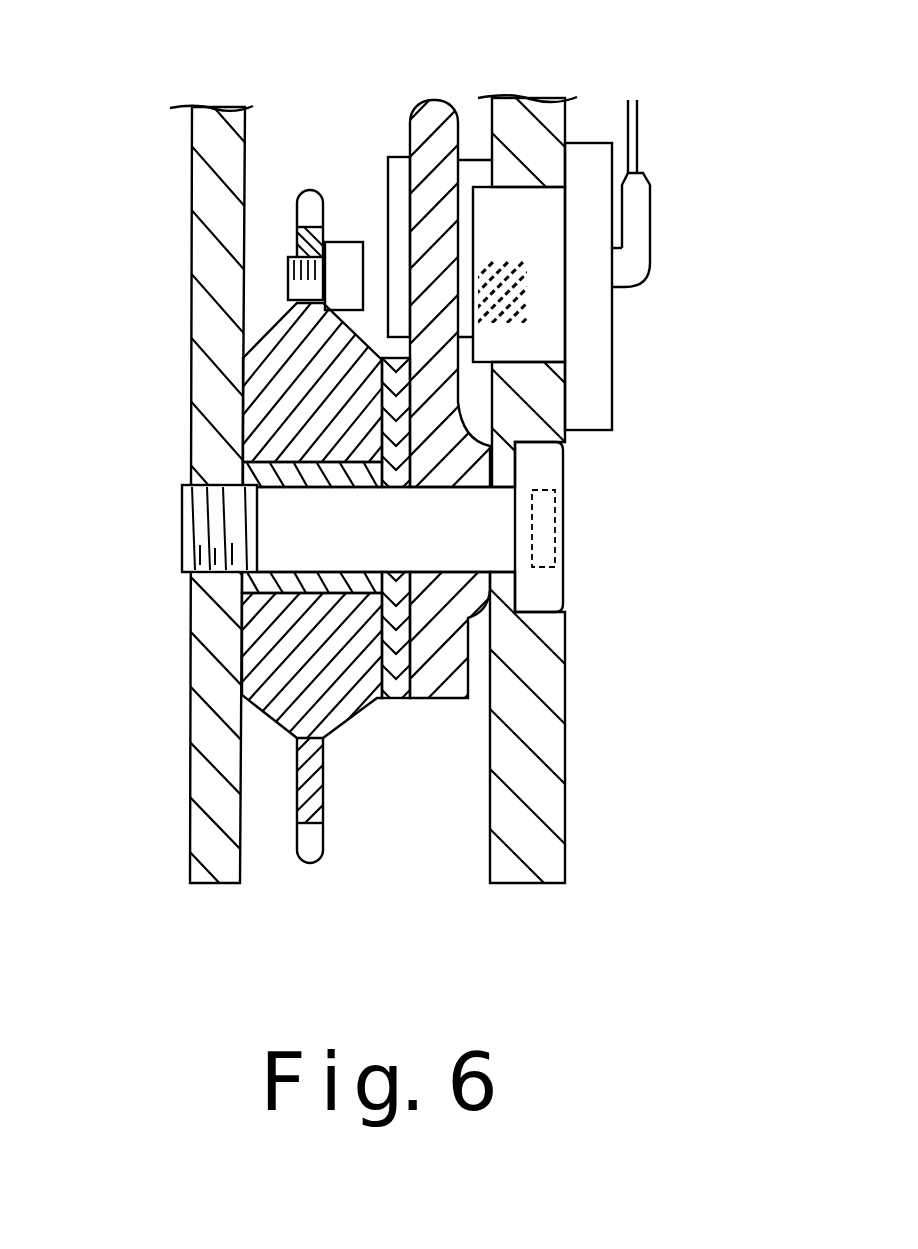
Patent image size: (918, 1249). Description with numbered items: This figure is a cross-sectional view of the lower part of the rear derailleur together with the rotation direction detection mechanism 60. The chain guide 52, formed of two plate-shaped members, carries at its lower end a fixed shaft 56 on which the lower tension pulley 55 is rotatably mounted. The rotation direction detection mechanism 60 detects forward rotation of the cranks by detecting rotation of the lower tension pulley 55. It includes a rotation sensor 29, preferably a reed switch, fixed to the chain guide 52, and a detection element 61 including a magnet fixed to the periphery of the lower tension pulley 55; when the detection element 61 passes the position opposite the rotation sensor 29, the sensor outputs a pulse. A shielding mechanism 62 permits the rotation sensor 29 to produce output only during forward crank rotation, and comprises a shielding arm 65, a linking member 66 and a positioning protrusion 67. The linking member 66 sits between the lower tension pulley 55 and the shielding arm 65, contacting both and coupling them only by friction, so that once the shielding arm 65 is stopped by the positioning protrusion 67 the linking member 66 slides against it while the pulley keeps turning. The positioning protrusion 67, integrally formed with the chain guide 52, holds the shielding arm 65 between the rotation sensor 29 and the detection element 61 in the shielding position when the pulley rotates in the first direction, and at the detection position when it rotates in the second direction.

The rotation sensor 29 is at (595, 366).
The chain guide 52 is at (533, 842).
The lower tension pulley 55 is at (277, 397).
The fixed shaft 56 is at (490, 518).
The rotation direction detection mechanism 60 is at (612, 310).
The detection element 61 is at (345, 255).
The shielding mechanism 62 is at (383, 131).
The shielding arm 65 is at (427, 677).
The linking member 66 is at (383, 697).
The positioning protrusion 67 is at (397, 292).